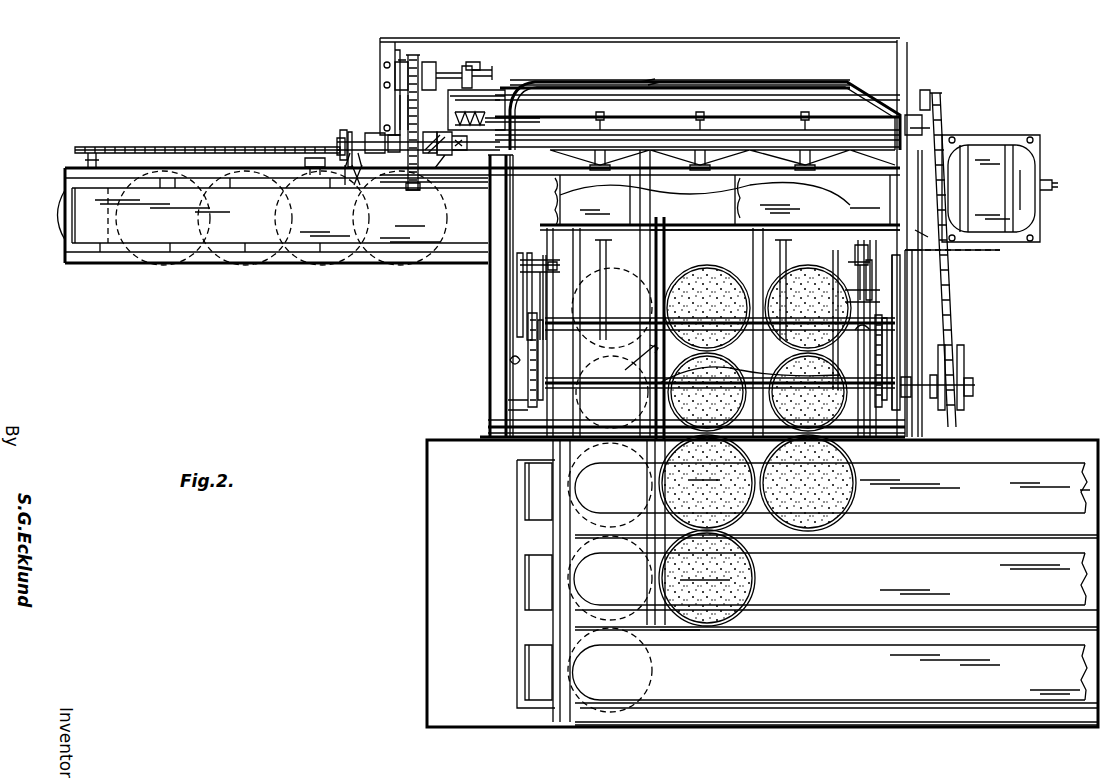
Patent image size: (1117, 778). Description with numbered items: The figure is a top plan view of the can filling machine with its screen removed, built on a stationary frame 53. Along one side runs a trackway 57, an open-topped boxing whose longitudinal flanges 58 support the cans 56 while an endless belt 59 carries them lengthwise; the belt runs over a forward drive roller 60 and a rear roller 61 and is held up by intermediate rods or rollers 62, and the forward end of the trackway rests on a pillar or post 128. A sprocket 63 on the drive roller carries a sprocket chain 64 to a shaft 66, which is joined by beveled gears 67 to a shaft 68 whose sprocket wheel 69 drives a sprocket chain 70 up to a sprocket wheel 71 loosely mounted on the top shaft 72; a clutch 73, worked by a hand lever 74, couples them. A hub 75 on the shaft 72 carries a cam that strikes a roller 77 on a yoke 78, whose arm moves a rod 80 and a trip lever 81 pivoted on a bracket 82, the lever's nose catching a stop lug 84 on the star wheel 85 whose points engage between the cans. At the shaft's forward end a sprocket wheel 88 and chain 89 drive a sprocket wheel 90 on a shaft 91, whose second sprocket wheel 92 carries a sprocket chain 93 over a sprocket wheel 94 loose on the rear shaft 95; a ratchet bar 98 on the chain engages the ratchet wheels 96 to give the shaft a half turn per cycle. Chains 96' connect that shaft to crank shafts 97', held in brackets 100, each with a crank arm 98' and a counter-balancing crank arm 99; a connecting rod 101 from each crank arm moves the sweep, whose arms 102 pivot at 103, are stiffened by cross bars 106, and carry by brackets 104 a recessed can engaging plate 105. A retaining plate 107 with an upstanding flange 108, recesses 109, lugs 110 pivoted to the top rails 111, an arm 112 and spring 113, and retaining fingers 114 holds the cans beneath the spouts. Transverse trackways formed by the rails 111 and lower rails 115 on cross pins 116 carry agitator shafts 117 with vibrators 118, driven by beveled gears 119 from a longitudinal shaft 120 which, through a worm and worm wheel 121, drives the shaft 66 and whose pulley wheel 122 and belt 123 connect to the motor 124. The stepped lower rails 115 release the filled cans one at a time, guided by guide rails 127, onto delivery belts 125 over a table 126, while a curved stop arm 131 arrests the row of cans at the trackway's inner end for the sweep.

The frame 53 is at (490, 352).
The cans 56 is at (185, 268).
The trackway 57 is at (140, 264).
The longitudinal flanges 58 is at (70, 178).
The endless belt or conveyor 59 is at (338, 252).
The forward roller 60 is at (72, 235).
The roller 61 is at (1000, 250).
The rods or rollers 62 is at (318, 260).
The sprocket 63 is at (90, 152).
The sprocket chain 64 is at (190, 146).
The shaft 66 is at (485, 110).
The beveled gears 67 is at (485, 68).
The shaft 68 is at (432, 62).
The sprocket wheel 69 is at (413, 55).
The sprocket chain 70 is at (400, 105).
The sprocket wheel 71 is at (420, 188).
The shaft 72 is at (400, 200).
The clutch 73 is at (445, 160).
The hand lever 74 is at (448, 157).
The hub 75 is at (340, 135).
The roller 77 is at (352, 135).
The yoke 78 is at (340, 140).
The rod 80 is at (372, 195).
The trip lever 81 is at (345, 168).
The bracket 82 is at (350, 165).
The stop lug 84 is at (392, 265).
The star wheel 85 is at (340, 205).
The sprocket wheel 88 is at (940, 165).
The chain 89 is at (975, 165).
The sprocket wheel 90 is at (960, 200).
The shaft 91 is at (945, 215).
The second sprocket wheel 92 is at (1030, 232).
The sprocket chain 93 is at (960, 262).
The sprocket wheel 94 is at (964, 368).
The shaft 95 is at (540, 432).
The ratchet wheels 96 is at (953, 400).
The chains 96' is at (719, 359).
The crank shafts 97' is at (703, 356).
The ratchet bar 98 is at (944, 332).
The crank arm 98' is at (697, 296).
The counter-balancing crank arm 99 is at (540, 375).
The brackets 100 is at (530, 262).
The connecting rod 101 is at (800, 212).
The arms 102 is at (520, 105).
The pivot 103 is at (530, 90).
The brackets 104 is at (580, 84).
The can engaging plate 105 is at (655, 150).
The cross bars 106 is at (755, 86).
The plate 107 is at (780, 242).
The upstanding flange 108 is at (726, 230).
The recesses 109 is at (606, 280).
The lugs 110 is at (755, 245).
The top rail 111 is at (760, 362).
The arm 112 is at (660, 250).
The spring 113 is at (635, 363).
The retaining fingers 114 is at (580, 262).
The lower rails 115 is at (640, 505).
The cross pins 116 is at (545, 433).
The agitator shaft 117 is at (740, 210).
The vibrator 118 is at (605, 405).
The beveled gears 119 is at (630, 110).
The longitudinal shaft 120 is at (790, 115).
The worm and worm wheel 121 is at (468, 62).
The pulley wheel 122 is at (940, 105).
The belt 123 is at (933, 95).
The motor 124 is at (1025, 140).
The delivery belts 125 is at (535, 672).
The table or support 126 is at (432, 466).
The guide rails 127 is at (1085, 440).
The pillar or post 128 is at (60, 210).
The curved stop arm 131 is at (845, 190).